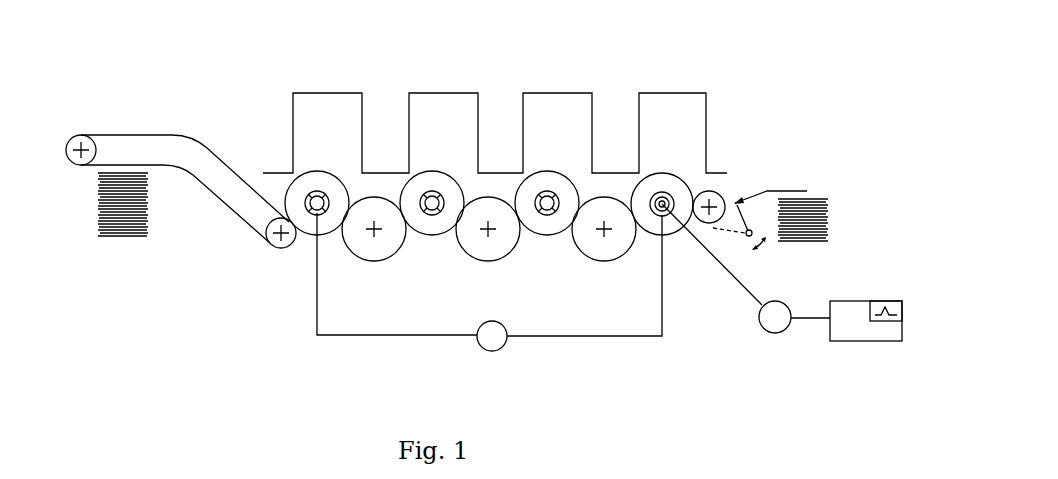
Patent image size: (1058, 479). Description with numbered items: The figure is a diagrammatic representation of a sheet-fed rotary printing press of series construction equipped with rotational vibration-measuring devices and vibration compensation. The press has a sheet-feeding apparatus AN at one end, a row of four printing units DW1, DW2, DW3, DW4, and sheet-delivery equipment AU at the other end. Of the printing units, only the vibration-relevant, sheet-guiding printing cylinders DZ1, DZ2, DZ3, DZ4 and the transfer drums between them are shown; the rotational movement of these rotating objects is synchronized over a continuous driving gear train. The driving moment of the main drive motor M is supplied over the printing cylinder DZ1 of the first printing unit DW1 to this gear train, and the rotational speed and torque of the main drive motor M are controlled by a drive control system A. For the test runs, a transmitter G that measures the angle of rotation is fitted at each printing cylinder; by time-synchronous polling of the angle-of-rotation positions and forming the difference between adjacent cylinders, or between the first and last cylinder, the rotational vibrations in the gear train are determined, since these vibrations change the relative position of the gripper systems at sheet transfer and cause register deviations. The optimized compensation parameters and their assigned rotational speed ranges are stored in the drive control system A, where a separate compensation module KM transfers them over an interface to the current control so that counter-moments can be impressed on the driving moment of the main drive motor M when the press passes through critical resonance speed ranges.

The sheet-delivery equipment AU is at (122, 145).
The printing unit DW4 is at (323, 113).
The printing unit DW3 is at (441, 113).
The printing unit DW2 is at (557, 113).
The first printing unit DW1 is at (674, 113).
The printing cylinder DZ4 is at (305, 190).
The printing cylinder DZ3 is at (441, 188).
The printing cylinder DZ2 is at (557, 190).
The printing cylinder DZ1 is at (675, 189).
The transmitter G is at (662, 204).
The main drive motor M is at (794, 317).
The drive control system A is at (892, 330).
The compensation module KM is at (902, 303).
The sheet-feeding apparatus AN is at (810, 195).